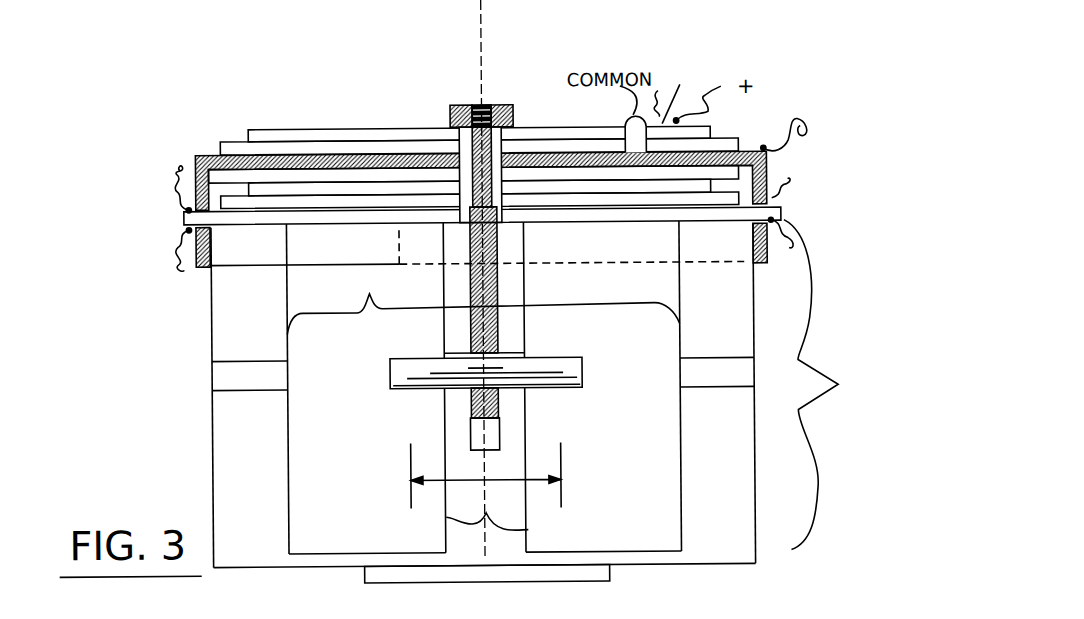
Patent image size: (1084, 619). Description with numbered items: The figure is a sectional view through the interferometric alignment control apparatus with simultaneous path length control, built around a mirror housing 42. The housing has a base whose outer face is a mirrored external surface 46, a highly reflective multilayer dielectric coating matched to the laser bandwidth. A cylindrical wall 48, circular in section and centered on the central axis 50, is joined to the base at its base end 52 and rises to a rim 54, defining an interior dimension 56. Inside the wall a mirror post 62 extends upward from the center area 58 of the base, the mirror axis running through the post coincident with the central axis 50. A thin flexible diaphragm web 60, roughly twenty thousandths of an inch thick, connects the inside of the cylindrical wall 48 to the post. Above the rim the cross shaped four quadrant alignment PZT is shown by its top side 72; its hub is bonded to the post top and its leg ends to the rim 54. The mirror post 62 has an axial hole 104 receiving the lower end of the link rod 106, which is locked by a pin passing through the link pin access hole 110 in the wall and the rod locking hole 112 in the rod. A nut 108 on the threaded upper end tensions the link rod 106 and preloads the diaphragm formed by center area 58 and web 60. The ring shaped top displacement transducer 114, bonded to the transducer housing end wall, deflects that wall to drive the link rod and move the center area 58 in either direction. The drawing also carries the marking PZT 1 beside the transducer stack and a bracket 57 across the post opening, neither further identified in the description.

The PZT element 1 is at (597, 125).
The mirror housing 42 is at (832, 384).
The mirrored external surface 46 is at (608, 573).
The cylindrical wall 48 is at (756, 339).
The central axis 50 is at (482, 53).
The base end 52 is at (728, 563).
The rim 54 is at (682, 225).
The interior dimension 56 is at (483, 302).
The central bore 57 is at (487, 512).
The center area of the base 58 is at (458, 480).
The diaphragm web 60 is at (670, 553).
The mirror post 62 is at (509, 319).
The top side 72 is at (477, 244).
The axial hole 104 is at (473, 102).
The link rod 106 is at (471, 320).
The nut 108 is at (582, 370).
The link pin access hole 110 is at (483, 374).
The rod locking hole 112 is at (460, 389).
The top displacement transducer 114 is at (679, 93).